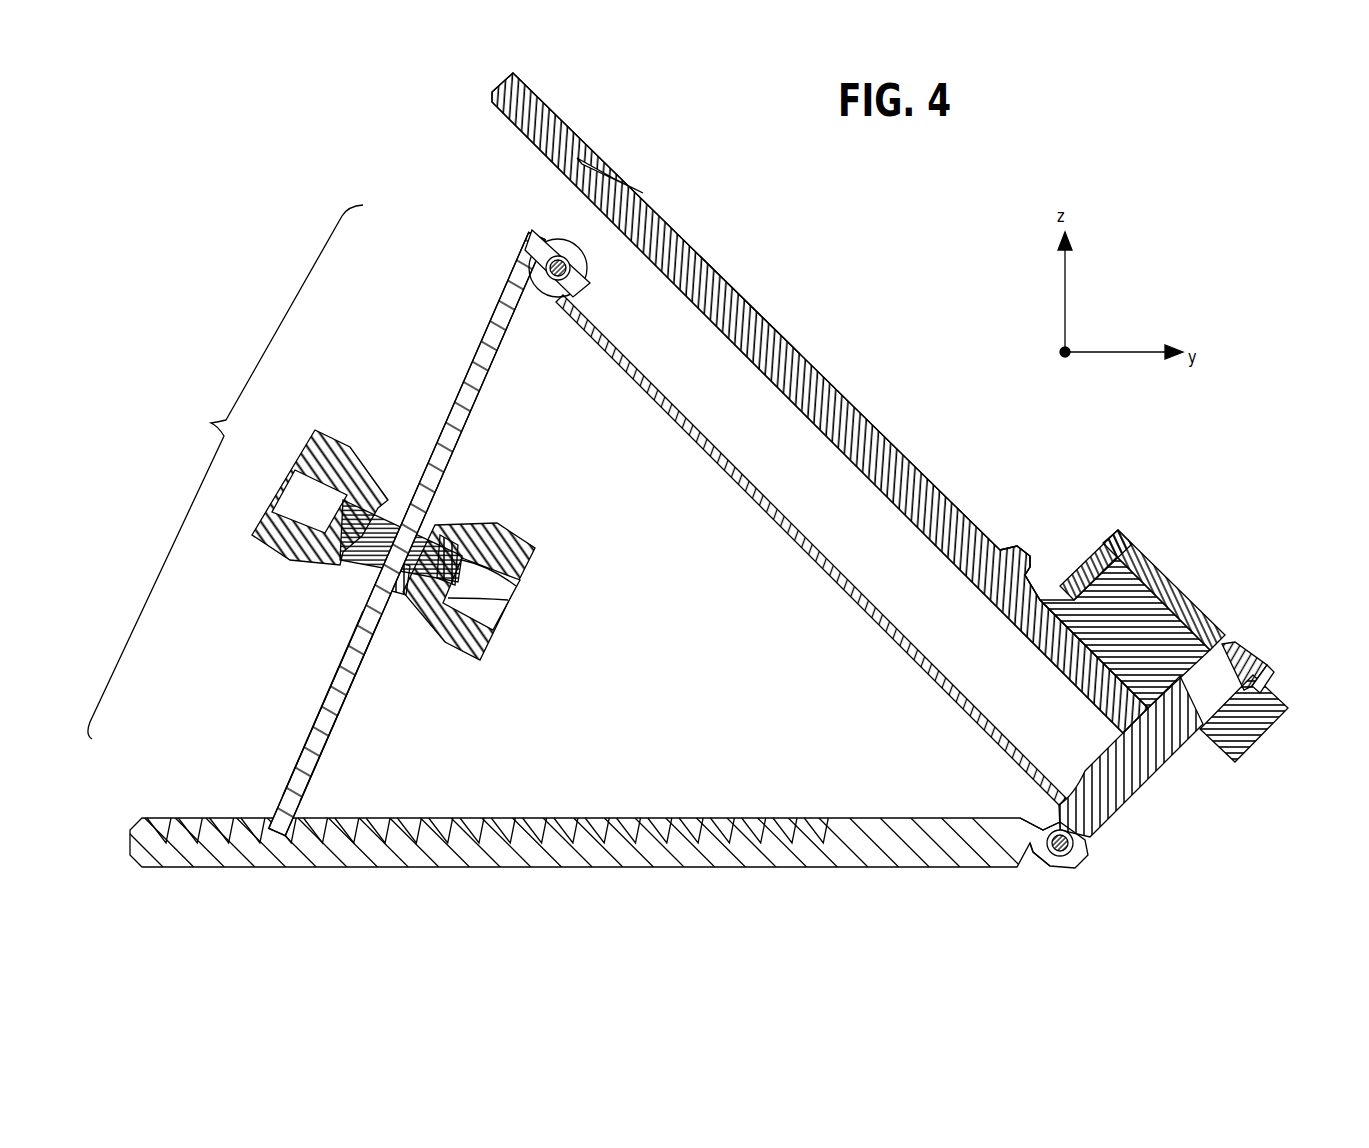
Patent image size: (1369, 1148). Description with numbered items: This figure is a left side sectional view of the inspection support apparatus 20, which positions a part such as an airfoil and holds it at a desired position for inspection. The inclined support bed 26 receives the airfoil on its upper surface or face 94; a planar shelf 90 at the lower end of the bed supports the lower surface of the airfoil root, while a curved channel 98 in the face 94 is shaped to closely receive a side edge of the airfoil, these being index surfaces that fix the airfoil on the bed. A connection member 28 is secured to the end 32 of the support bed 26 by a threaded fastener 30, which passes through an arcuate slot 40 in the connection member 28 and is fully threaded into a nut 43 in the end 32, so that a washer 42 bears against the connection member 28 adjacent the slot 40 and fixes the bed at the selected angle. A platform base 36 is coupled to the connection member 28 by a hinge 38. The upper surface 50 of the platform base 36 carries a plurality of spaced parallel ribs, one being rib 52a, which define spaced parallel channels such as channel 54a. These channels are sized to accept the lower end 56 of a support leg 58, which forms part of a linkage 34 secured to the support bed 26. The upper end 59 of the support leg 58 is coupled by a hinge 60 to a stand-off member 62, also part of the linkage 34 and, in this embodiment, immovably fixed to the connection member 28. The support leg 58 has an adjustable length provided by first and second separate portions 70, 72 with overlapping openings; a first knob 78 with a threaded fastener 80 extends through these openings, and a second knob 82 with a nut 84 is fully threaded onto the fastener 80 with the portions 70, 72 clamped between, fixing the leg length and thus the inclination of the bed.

The inspection support apparatus 20 is at (833, 255).
The support bed 26 is at (880, 428).
The connection member 28 is at (1113, 795).
The threaded fastener 30 is at (1275, 705).
The end of the support bed 32 is at (1190, 600).
The linkage 34 is at (495, 215).
The platform base 36 is at (193, 864).
The hinge 38 is at (1063, 858).
The slot 40 is at (1248, 688).
The washer 42 is at (1265, 672).
The nut 43 is at (1062, 585).
The upper surface 50 is at (930, 818).
The rib 52a is at (810, 820).
The channel 54a is at (826, 838).
The lower end of the support leg 56 is at (313, 712).
The support leg 58 is at (225, 472).
The upper end of the support leg 59 is at (507, 318).
The hinge 60 is at (547, 266).
The stand-off member 62 is at (652, 404).
The first portion of the support leg 70 is at (462, 372).
The second portion of the support leg 72 is at (345, 706).
The first knob 78 is at (266, 516).
The threaded fastener 80 is at (505, 612).
The second knob 82 is at (515, 528).
The nut 84 is at (498, 586).
The shelf 90 is at (1043, 597).
The upper surface of the support bed 94 is at (688, 238).
The curved channel 98 is at (613, 178).